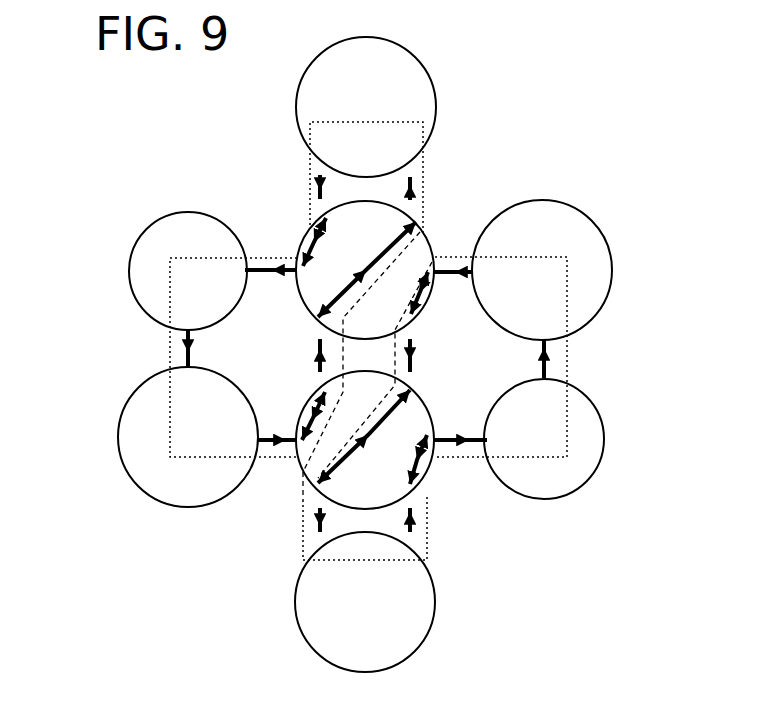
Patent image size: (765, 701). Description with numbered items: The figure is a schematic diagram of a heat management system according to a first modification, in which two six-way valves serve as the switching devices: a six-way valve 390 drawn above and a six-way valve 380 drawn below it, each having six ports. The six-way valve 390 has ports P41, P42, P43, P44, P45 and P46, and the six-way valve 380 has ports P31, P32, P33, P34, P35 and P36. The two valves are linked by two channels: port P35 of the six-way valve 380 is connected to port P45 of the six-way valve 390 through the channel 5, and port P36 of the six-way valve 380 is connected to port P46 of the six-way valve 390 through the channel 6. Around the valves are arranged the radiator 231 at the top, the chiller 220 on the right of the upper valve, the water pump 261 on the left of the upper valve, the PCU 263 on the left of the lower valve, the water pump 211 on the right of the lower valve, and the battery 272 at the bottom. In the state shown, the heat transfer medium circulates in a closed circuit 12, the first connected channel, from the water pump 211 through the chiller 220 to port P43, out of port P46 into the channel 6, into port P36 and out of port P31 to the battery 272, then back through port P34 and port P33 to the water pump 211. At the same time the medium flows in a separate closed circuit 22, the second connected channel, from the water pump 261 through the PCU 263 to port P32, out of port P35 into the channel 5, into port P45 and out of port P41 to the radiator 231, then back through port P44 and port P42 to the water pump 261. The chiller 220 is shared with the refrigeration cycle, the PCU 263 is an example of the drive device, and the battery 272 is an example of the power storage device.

The radiator 231 is at (417, 60).
The chiller 220 is at (594, 217).
The water pump 261 is at (170, 210).
The PCU 263 is at (130, 400).
The water pump 211 is at (598, 420).
The battery 272 is at (435, 588).
The closed circuit 22 is at (228, 458).
The closed circuit 12 is at (497, 253).
The six-way valve 390 is at (355, 203).
The six-way valve 380 is at (360, 373).
The channel 5 is at (320, 343).
The channel 6 is at (412, 343).
The port P41 is at (418, 222).
The port P42 is at (306, 258).
The port P43 is at (430, 260).
The port P44 is at (320, 228).
The port P45 is at (316, 320).
The port P46 is at (423, 312).
The port P31 is at (310, 487).
The port P32 is at (310, 455).
The port P33 is at (432, 462).
The port P34 is at (422, 490).
The port P35 is at (315, 400).
The port P36 is at (424, 398).